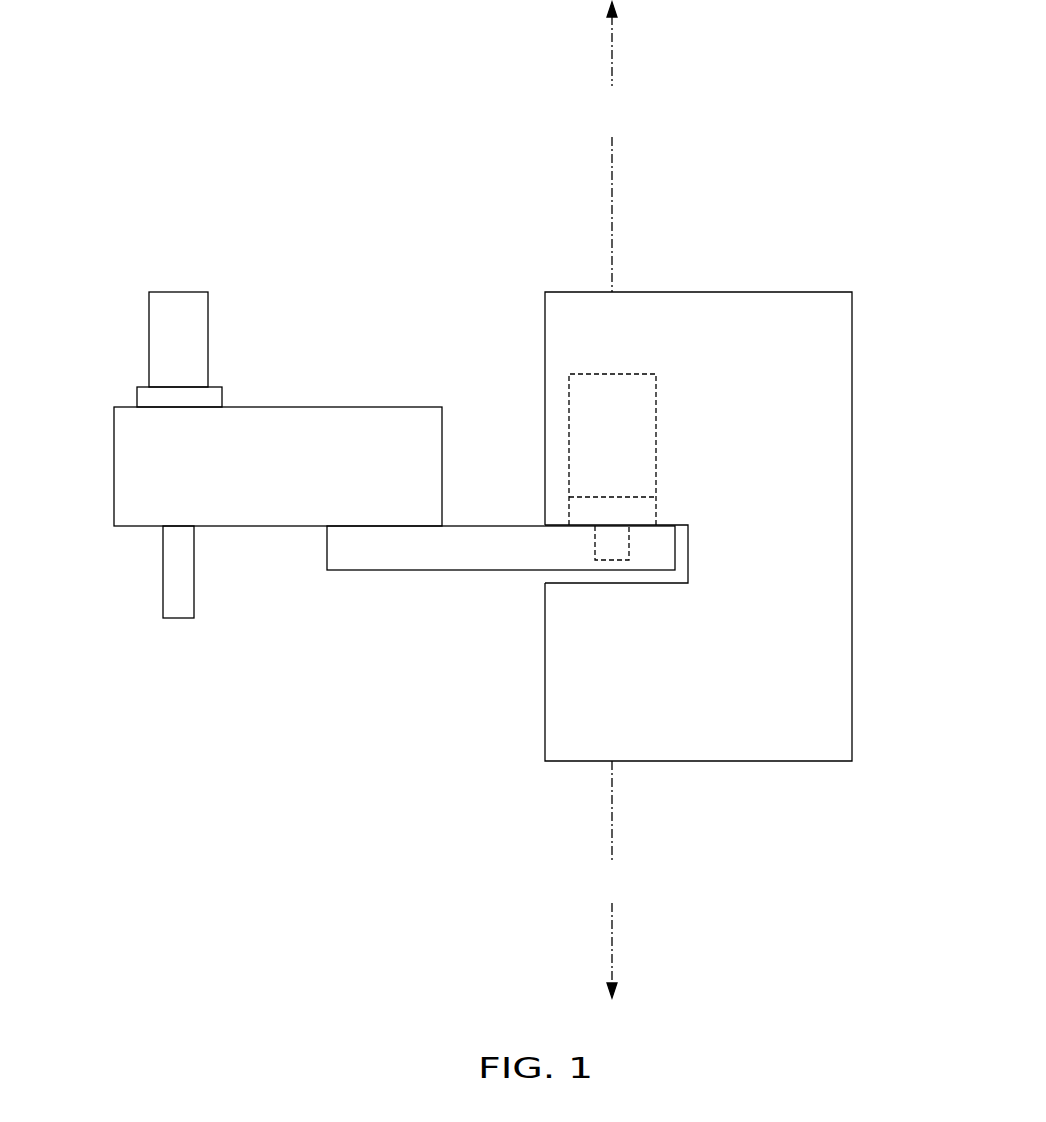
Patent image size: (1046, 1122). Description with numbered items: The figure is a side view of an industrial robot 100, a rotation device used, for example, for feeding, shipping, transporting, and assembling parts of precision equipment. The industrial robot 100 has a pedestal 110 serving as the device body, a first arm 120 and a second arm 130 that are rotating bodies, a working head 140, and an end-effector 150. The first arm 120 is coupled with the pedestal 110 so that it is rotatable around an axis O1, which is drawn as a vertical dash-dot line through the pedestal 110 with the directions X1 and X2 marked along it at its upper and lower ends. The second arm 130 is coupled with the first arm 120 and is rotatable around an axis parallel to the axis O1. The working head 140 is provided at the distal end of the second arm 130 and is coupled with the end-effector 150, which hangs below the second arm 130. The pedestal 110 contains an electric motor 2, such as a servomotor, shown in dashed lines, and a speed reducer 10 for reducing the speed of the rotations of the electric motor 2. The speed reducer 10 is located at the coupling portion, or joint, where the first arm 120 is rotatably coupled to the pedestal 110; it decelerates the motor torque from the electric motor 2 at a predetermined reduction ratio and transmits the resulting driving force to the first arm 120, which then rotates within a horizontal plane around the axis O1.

The industrial robot 100 is at (716, 147).
The pedestal 110 is at (852, 373).
The first arm 120 is at (418, 572).
The second arm 130 is at (347, 407).
The working head 140 is at (137, 398).
The end-effector 150 is at (163, 568).
The electric motor 2 is at (656, 420).
The speed reducer 10 is at (662, 510).
The axis O1 is at (612, 177).
The first direction X1 is at (633, 52).
The second direction X2 is at (633, 942).